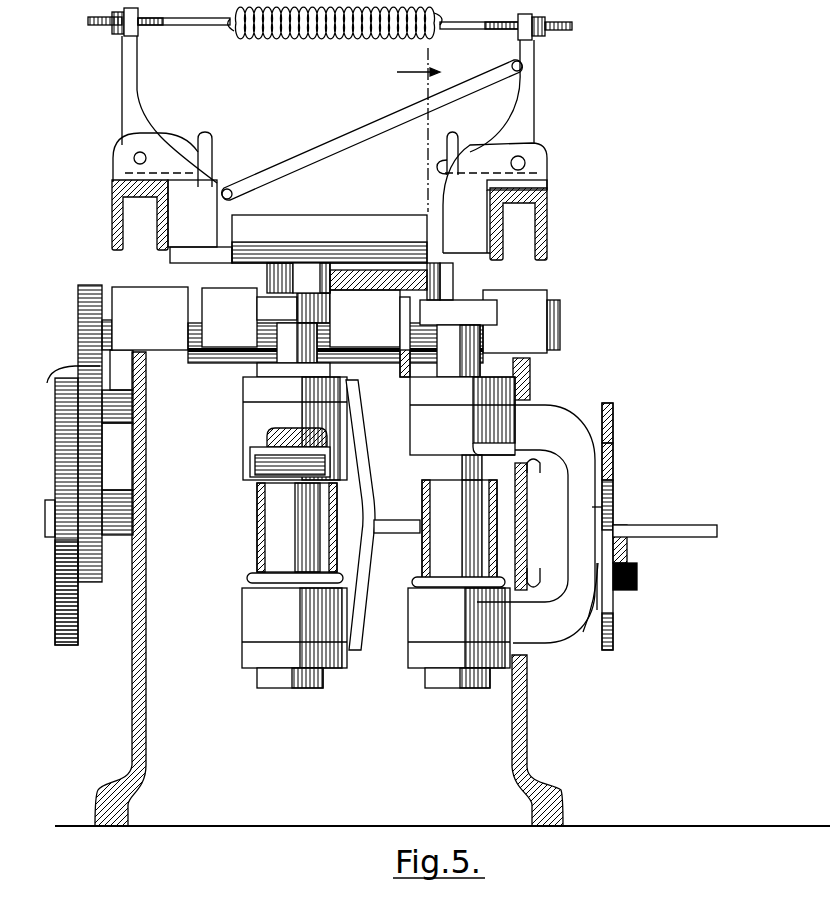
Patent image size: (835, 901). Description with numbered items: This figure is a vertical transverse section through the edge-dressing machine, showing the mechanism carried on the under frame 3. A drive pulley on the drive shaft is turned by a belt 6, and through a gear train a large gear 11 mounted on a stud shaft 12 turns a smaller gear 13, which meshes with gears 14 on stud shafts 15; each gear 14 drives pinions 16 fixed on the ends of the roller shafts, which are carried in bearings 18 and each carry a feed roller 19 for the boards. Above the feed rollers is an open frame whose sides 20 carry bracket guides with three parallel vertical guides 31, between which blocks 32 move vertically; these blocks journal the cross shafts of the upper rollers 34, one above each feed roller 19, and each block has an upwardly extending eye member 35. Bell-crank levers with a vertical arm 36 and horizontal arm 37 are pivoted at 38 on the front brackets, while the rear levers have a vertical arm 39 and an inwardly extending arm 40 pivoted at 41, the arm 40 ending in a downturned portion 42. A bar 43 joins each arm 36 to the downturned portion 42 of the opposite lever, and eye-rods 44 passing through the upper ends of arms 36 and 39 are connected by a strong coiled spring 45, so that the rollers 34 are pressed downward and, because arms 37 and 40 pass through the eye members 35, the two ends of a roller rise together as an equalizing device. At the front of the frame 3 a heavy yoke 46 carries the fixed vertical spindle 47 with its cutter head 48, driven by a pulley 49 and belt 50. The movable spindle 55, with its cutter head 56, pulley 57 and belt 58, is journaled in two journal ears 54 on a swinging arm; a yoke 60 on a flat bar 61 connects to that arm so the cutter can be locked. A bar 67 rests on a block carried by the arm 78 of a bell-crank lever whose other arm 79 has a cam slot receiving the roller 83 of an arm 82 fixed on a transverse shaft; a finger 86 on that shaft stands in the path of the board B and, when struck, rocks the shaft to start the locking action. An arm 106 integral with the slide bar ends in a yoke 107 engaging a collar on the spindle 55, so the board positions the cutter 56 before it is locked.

The under frame 3 is at (147, 530).
The belt 6 is at (420, 126).
The gear 11 is at (63, 557).
The stud shaft 12 is at (52, 527).
The gear 13 is at (100, 470).
The gears 14 is at (78, 397).
The stud shafts 15 is at (60, 366).
The pinions 16 is at (82, 303).
The bearings 18 is at (133, 302).
The roller 19 is at (230, 350).
The sides 20 is at (117, 197).
The vertical guides 31 is at (132, 173).
The blocks 32 is at (233, 212).
The rollers 34 is at (305, 227).
The eye member 35 is at (207, 137).
The vertical arm 36 is at (530, 102).
The horizontal arm 37 is at (435, 162).
The pivot 38 is at (524, 163).
The vertical arm 39 is at (128, 80).
The inwardly extending arm 40 is at (183, 153).
The pivot 41 is at (137, 157).
The downturned portion 42 is at (233, 175).
The bar 43 is at (350, 140).
The eye-rods 44 is at (192, 26).
The coiled spring 45 is at (317, 37).
The yoke 46 is at (560, 427).
The spindle 47 is at (443, 457).
The cutter head 48 is at (478, 297).
The drive pulley 49 is at (440, 545).
The belt 50 is at (500, 552).
The journal ears 54 is at (250, 423).
The spindle 55 is at (273, 353).
The cutter head 56 is at (312, 263).
The drive pulley 57 is at (257, 572).
The belt 58 is at (257, 525).
The yoke 60 is at (363, 455).
The flat bar 61 is at (643, 527).
The bar 67 is at (613, 408).
The arm 78 is at (613, 455).
The arm 79 is at (613, 620).
The arm 82 is at (627, 555).
The roller 83 is at (583, 627).
The finger 86 is at (393, 353).
The arm 106 is at (288, 433).
The yoke 107 is at (250, 463).
The board B is at (357, 275).